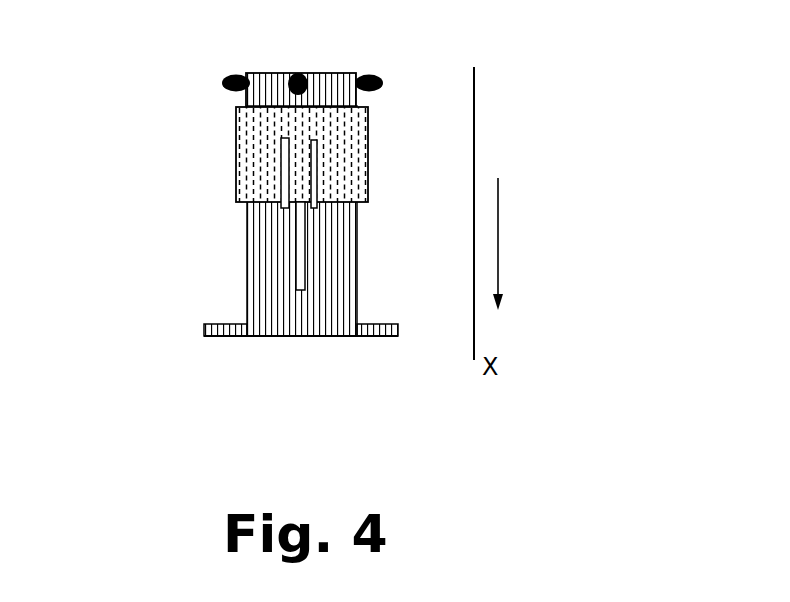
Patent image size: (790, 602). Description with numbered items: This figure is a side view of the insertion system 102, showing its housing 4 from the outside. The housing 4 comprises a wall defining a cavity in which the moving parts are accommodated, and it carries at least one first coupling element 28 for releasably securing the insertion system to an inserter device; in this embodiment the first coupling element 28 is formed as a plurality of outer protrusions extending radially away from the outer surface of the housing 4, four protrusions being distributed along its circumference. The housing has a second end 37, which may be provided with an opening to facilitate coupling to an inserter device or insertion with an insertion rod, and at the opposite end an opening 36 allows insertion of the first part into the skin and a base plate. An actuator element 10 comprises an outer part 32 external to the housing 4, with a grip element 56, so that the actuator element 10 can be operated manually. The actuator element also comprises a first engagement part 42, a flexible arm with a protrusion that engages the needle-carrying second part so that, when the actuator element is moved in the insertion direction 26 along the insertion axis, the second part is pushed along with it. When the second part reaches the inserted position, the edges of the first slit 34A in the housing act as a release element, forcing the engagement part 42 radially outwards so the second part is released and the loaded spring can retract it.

The insertion system 102 is at (247, 214).
The actuator element 10 is at (297, 214).
The first coupling element 28 is at (282, 80).
The second end 37 is at (320, 73).
The first grip element 56 is at (250, 122).
The outer part 32 is at (345, 128).
The first engagement part 42 is at (302, 179).
The first slit 34A is at (297, 260).
The housing 4 is at (268, 312).
The opening 36 is at (313, 330).
The insertion direction 26 is at (498, 238).